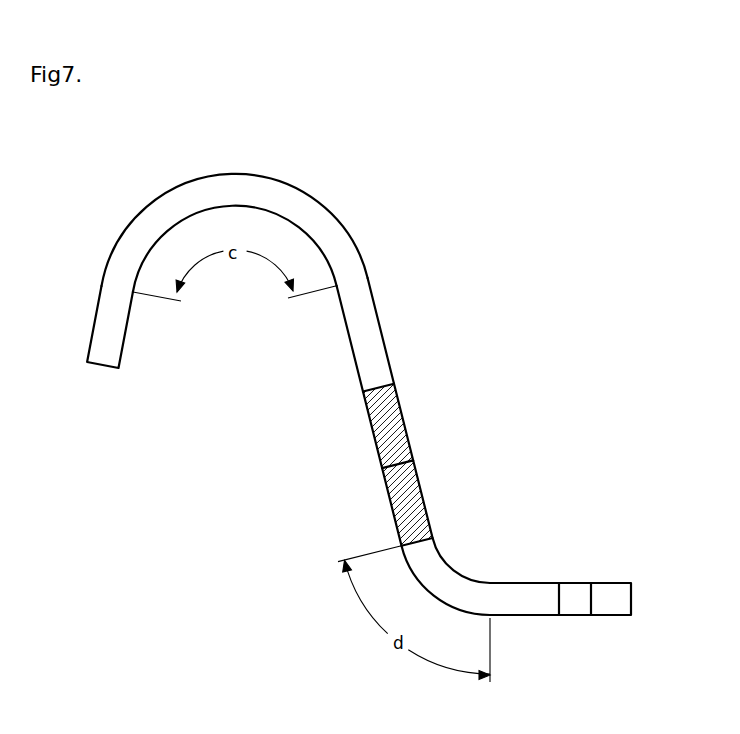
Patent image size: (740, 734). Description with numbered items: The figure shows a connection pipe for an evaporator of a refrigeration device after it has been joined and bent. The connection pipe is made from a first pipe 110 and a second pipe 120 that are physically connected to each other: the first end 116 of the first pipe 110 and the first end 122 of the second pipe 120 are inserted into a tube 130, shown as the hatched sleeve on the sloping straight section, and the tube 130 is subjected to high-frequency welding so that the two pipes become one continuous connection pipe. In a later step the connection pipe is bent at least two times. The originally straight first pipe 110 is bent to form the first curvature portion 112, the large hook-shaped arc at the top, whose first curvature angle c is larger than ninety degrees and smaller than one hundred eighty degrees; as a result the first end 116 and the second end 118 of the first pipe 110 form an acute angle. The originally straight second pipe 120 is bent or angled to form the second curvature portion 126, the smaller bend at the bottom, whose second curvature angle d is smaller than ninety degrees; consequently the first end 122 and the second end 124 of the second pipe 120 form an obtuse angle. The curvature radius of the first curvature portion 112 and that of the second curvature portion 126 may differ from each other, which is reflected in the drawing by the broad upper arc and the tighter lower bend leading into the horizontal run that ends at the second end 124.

The first pipe 110 is at (404, 284).
The first curvature portion 112 is at (237, 188).
The first end of the first pipe 116 is at (375, 434).
The second end of the first pipe 118 is at (100, 370).
The second pipe 120 is at (527, 616).
The first end of the second pipe 122 is at (395, 503).
The second end of the second pipe 124 is at (605, 583).
The second curvature portion 126 is at (447, 577).
The tube 130 is at (405, 422).